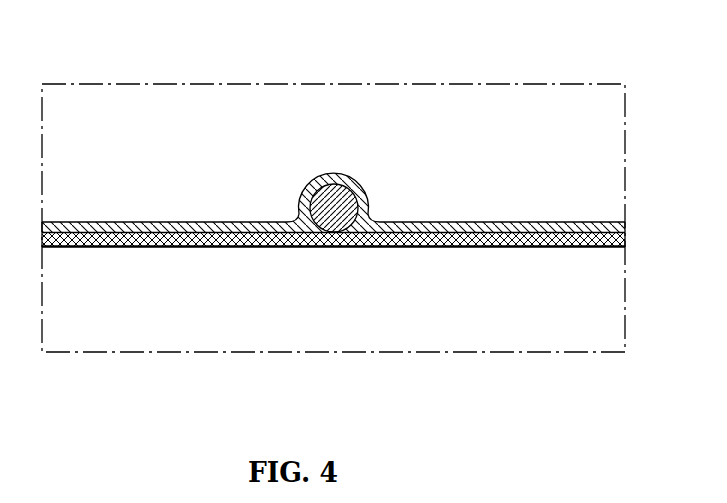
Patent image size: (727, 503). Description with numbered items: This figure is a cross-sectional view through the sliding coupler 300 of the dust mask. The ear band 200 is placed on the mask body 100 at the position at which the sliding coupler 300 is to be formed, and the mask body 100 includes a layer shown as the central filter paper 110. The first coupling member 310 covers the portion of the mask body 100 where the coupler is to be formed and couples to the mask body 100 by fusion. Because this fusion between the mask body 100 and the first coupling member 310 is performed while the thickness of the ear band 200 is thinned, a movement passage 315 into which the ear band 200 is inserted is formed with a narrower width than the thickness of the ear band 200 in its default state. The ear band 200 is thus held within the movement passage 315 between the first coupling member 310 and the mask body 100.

The mask body 100 is at (480, 259).
The central filter paper 110 is at (563, 247).
The ear band 200 is at (336, 187).
The sliding coupler 300 is at (449, 211).
The first coupling member 310 is at (533, 222).
The movement passage 315 is at (312, 190).